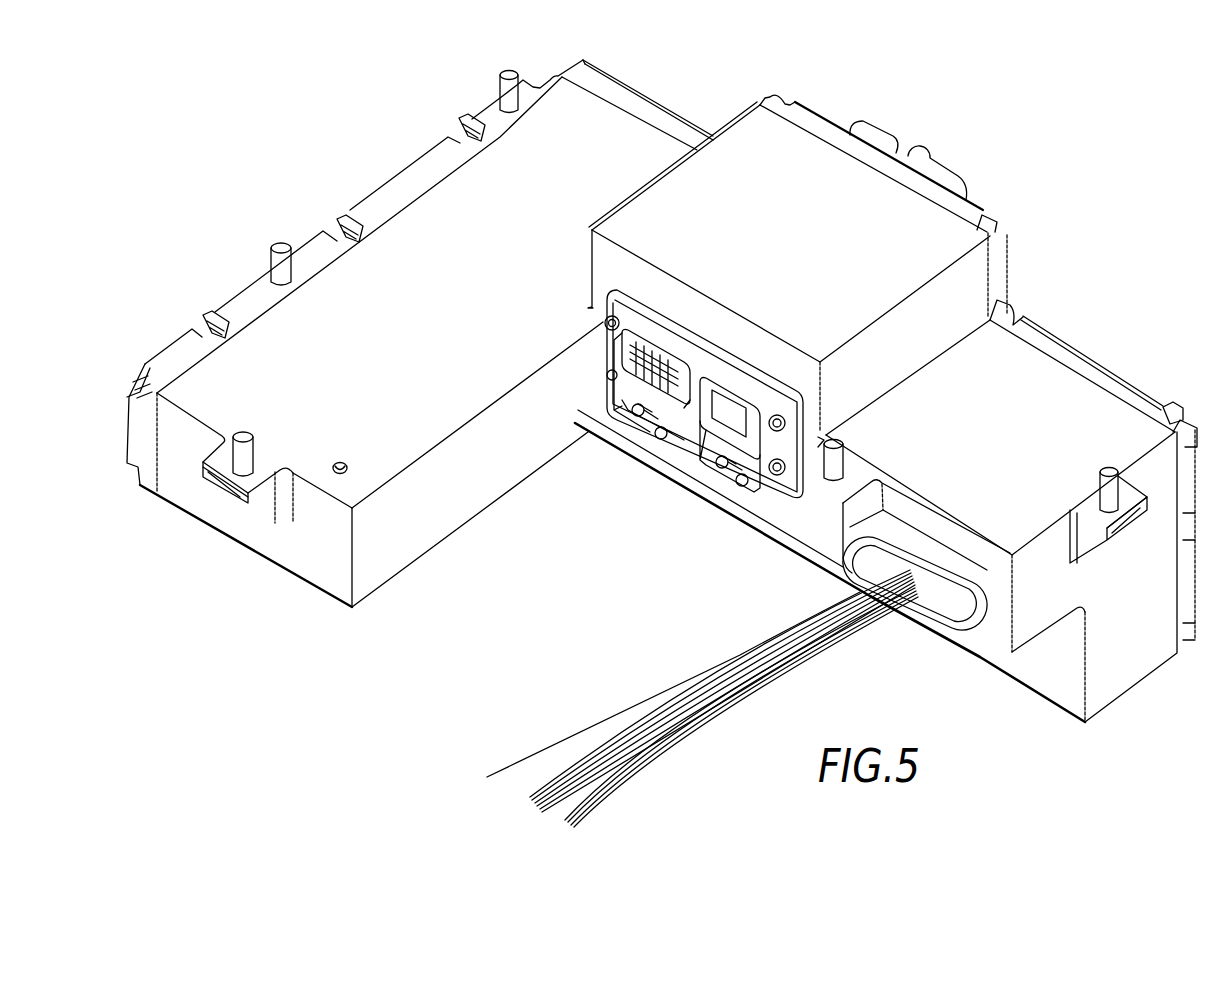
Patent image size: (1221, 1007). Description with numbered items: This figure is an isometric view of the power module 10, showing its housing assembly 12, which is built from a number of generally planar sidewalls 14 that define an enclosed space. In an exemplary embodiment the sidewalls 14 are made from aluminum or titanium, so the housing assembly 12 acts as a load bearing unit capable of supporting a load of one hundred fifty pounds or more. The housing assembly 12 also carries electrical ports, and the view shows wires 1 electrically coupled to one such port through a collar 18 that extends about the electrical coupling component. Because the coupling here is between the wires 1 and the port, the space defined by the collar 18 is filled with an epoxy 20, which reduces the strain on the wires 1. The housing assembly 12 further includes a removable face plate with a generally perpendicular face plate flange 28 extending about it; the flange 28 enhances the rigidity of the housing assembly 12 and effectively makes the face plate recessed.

The wires 1 is at (678, 730).
The power module 10 is at (708, 88).
The housing assembly 12 is at (404, 245).
The sidewalls 14 is at (590, 112).
The collar 18 is at (923, 542).
The epoxy 20 is at (916, 595).
The face plate flange 28 is at (1107, 376).